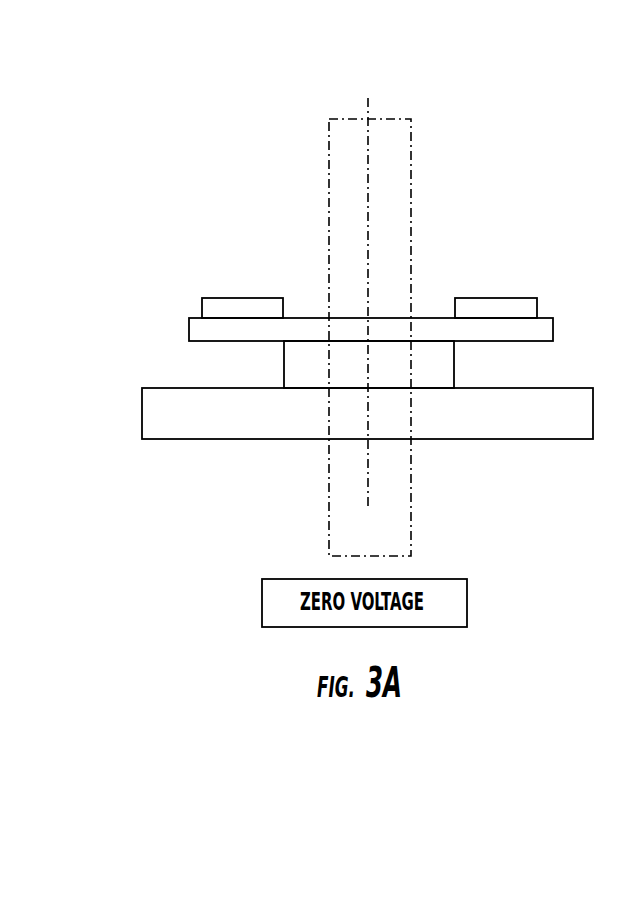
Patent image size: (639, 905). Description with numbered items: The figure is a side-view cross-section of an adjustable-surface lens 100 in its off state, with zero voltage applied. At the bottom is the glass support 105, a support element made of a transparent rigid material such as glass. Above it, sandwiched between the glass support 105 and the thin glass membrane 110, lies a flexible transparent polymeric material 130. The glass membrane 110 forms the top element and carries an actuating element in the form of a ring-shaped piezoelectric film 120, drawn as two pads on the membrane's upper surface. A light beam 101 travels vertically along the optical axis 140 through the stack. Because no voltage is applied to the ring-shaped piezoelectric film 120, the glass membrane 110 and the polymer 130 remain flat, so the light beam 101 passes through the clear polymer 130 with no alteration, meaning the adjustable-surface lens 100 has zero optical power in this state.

The adjustable-surface lens 100 is at (630, 446).
The light beam 101 is at (422, 516).
The glass support 105 is at (128, 423).
The glass membrane 110 is at (566, 315).
The ring-shaped piezoelectric film 120 is at (438, 292).
The flexible transparent polymeric material 130 is at (272, 361).
The optical axis 140 is at (380, 104).